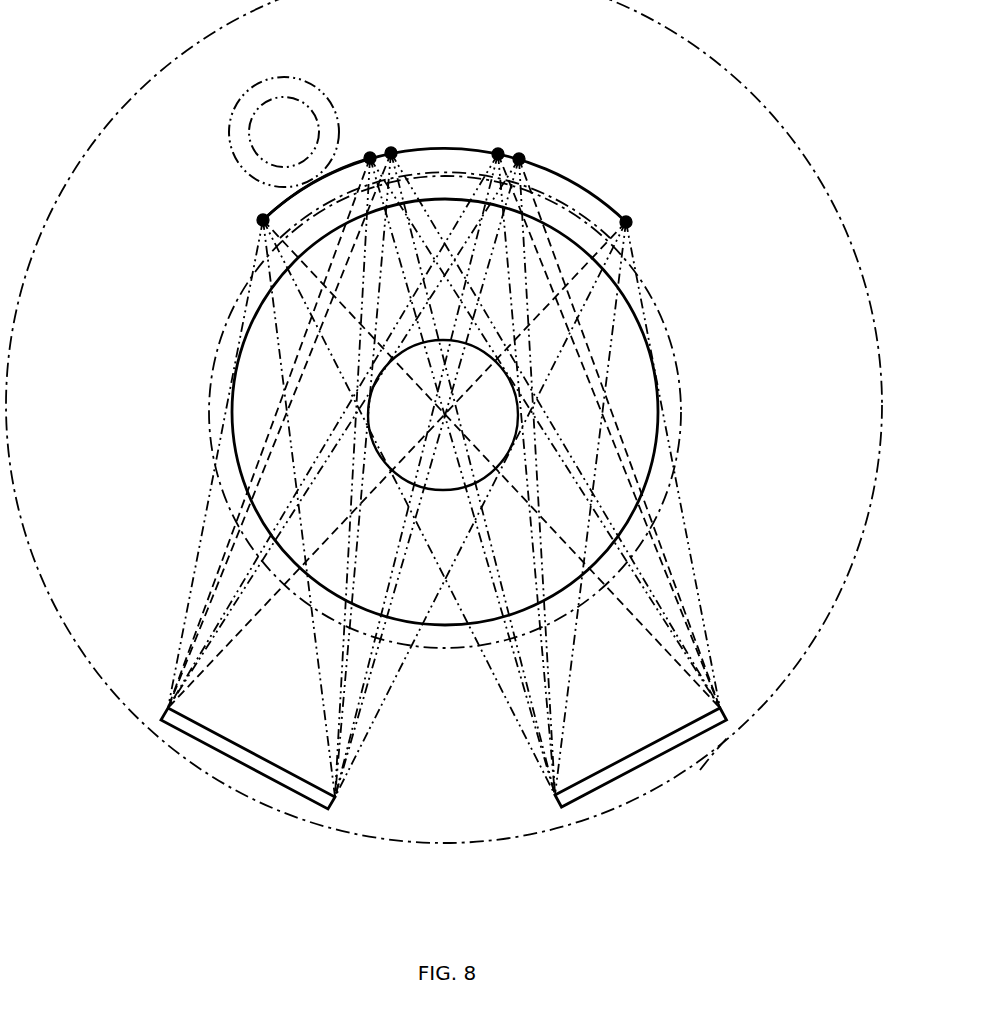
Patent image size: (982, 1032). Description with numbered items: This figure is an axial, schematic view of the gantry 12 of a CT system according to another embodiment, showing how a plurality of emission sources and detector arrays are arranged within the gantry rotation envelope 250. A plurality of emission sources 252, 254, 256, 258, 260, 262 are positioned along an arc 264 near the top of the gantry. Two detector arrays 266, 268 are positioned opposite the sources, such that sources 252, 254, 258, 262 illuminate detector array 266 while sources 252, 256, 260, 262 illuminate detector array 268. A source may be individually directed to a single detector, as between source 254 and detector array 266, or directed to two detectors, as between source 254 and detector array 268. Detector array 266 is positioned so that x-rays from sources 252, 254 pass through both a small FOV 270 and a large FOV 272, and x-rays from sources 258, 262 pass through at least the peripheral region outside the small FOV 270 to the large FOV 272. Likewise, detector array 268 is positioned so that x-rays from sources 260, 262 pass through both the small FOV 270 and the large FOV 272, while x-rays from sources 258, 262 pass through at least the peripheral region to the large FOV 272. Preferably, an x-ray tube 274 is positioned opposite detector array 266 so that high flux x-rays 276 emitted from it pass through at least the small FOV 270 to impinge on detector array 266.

The gantry 12 is at (713, 748).
The gantry rotation envelope 250 is at (752, 68).
The emission source 252 is at (260, 223).
The emission source 254 is at (369, 156).
The emission source 256 is at (392, 152).
The emission source 258 is at (497, 152).
The emission source 260 is at (520, 157).
The emission source 262 is at (629, 222).
The arc 264 is at (578, 185).
The detector array 266 is at (556, 803).
The detector array 268 is at (338, 800).
The small FOV 270 is at (502, 368).
The large FOV 272 is at (652, 463).
The x-ray tube 274 is at (243, 97).
The high flux x-rays 276 is at (307, 184).